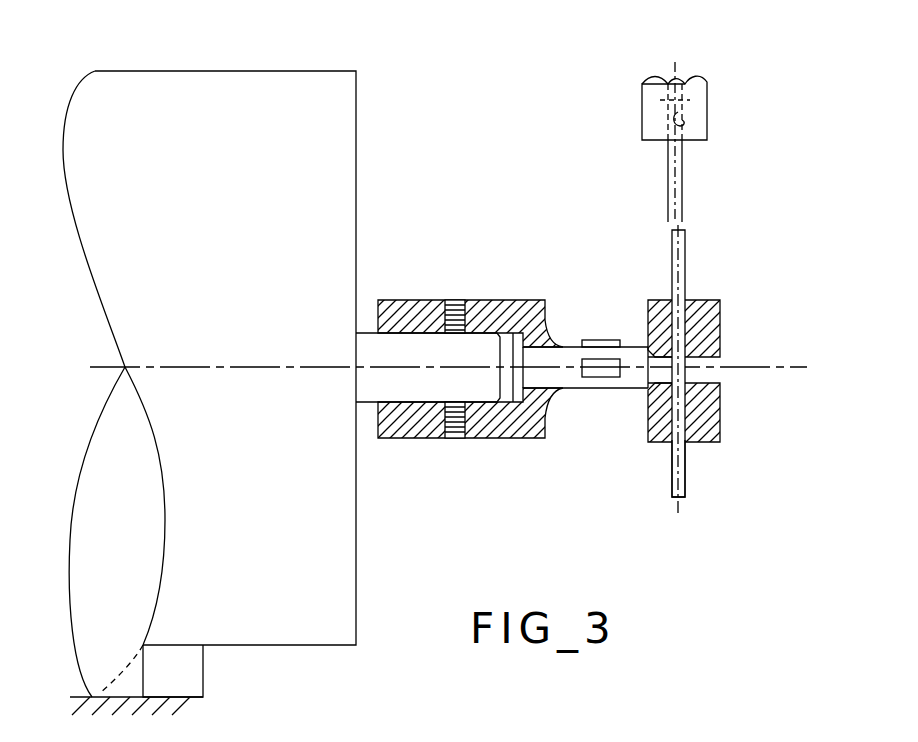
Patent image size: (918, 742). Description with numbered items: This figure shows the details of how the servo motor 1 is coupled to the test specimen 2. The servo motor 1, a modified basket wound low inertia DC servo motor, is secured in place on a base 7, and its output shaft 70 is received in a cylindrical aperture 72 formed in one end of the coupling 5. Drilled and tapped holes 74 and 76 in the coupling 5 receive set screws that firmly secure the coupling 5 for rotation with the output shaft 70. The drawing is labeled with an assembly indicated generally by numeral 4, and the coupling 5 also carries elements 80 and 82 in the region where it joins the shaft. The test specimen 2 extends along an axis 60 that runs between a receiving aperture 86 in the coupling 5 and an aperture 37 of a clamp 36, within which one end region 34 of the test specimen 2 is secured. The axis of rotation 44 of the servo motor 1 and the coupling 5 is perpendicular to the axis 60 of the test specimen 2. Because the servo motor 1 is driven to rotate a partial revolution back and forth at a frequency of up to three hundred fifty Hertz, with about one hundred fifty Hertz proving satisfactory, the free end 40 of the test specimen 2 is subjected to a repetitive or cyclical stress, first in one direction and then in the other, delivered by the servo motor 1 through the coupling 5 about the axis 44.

The servo motor 1 is at (268, 71).
The test specimen 2 is at (685, 246).
The drive assembly 4 is at (448, 188).
The coupling 5 is at (485, 300).
The base 7 is at (203, 677).
The end region 34 is at (668, 97).
The clamp 36 is at (707, 112).
The aperture 37 is at (686, 128).
The free end 40 is at (686, 479).
The axis of rotation 44 is at (772, 368).
The axis 60 is at (682, 207).
The output shaft 70 is at (373, 387).
The cylindrical aperture 72 is at (412, 405).
The drilled and tapped hole 74 is at (455, 300).
The drilled and tapped hole 76 is at (460, 440).
The key 80 is at (596, 340).
The pin 82 is at (596, 377).
The receiving aperture 86 is at (690, 410).